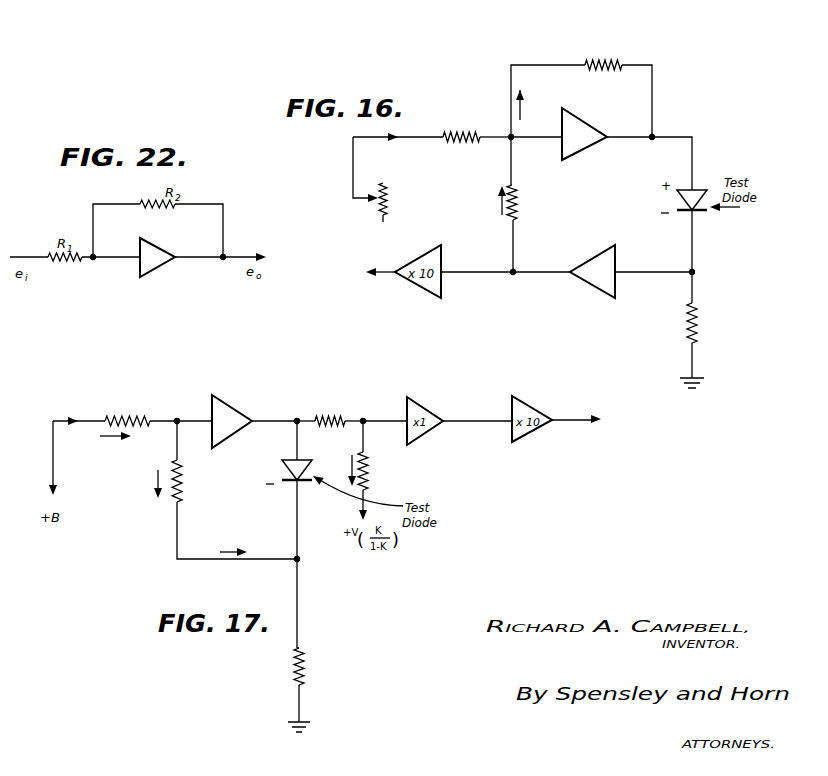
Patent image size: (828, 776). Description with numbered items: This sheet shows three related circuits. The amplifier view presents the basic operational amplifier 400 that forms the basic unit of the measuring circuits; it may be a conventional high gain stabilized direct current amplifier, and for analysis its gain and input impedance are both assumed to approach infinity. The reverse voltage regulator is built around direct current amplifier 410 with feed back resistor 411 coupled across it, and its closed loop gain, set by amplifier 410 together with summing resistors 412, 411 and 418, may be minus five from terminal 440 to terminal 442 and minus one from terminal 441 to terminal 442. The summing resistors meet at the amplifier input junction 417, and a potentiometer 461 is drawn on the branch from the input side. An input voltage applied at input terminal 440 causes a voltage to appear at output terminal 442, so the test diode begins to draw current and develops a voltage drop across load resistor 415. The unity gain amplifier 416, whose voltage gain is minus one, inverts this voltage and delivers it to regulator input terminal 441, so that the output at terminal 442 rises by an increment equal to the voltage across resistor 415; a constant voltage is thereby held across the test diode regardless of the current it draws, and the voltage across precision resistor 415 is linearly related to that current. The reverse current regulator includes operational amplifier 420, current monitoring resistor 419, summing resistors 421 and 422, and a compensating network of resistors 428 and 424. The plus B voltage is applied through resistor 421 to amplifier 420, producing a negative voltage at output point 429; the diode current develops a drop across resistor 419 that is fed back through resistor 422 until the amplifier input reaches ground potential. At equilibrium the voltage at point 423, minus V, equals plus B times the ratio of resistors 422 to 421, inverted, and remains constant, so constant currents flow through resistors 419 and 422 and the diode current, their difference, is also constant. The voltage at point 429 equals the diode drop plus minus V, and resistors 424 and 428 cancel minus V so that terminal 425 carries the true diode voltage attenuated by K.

In FIG. 16, the input terminal 440 is at (353, 137).
In FIG. 16, the summing resistor 412 is at (477, 127).
In FIG. 16, the summing junction 417 is at (508, 140).
In FIG. 16, the feed back resistor 411 is at (600, 64).
In FIG. 16, the direct current amplifier 410 is at (598, 131).
In FIG. 16, the output terminal 442 is at (692, 133).
In FIG. 16, the potentiometer 461 is at (390, 196).
In FIG. 16, the summing resistor 418 is at (516, 196).
In FIG. 16, the regulator input terminal 441 is at (515, 270).
In FIG. 16, the unity gain amplifier 416 is at (592, 255).
In FIG. 16, the load resistor 415 is at (700, 328).
In FIG. 22, the operational amplifier 400 is at (158, 270).
In FIG. 17, the summing resistor 421 is at (134, 417).
In FIG. 17, the operational amplifier 420 is at (232, 404).
In FIG. 17, the output point 429 is at (299, 411).
In FIG. 17, the resistor 428 is at (340, 411).
In FIG. 17, the terminal 425 is at (366, 417).
In FIG. 17, the summing resistor 422 is at (182, 488).
In FIG. 17, the resistor 424 is at (370, 472).
In FIG. 17, the point 423 is at (300, 558).
In FIG. 17, the current monitoring resistor 419 is at (305, 677).